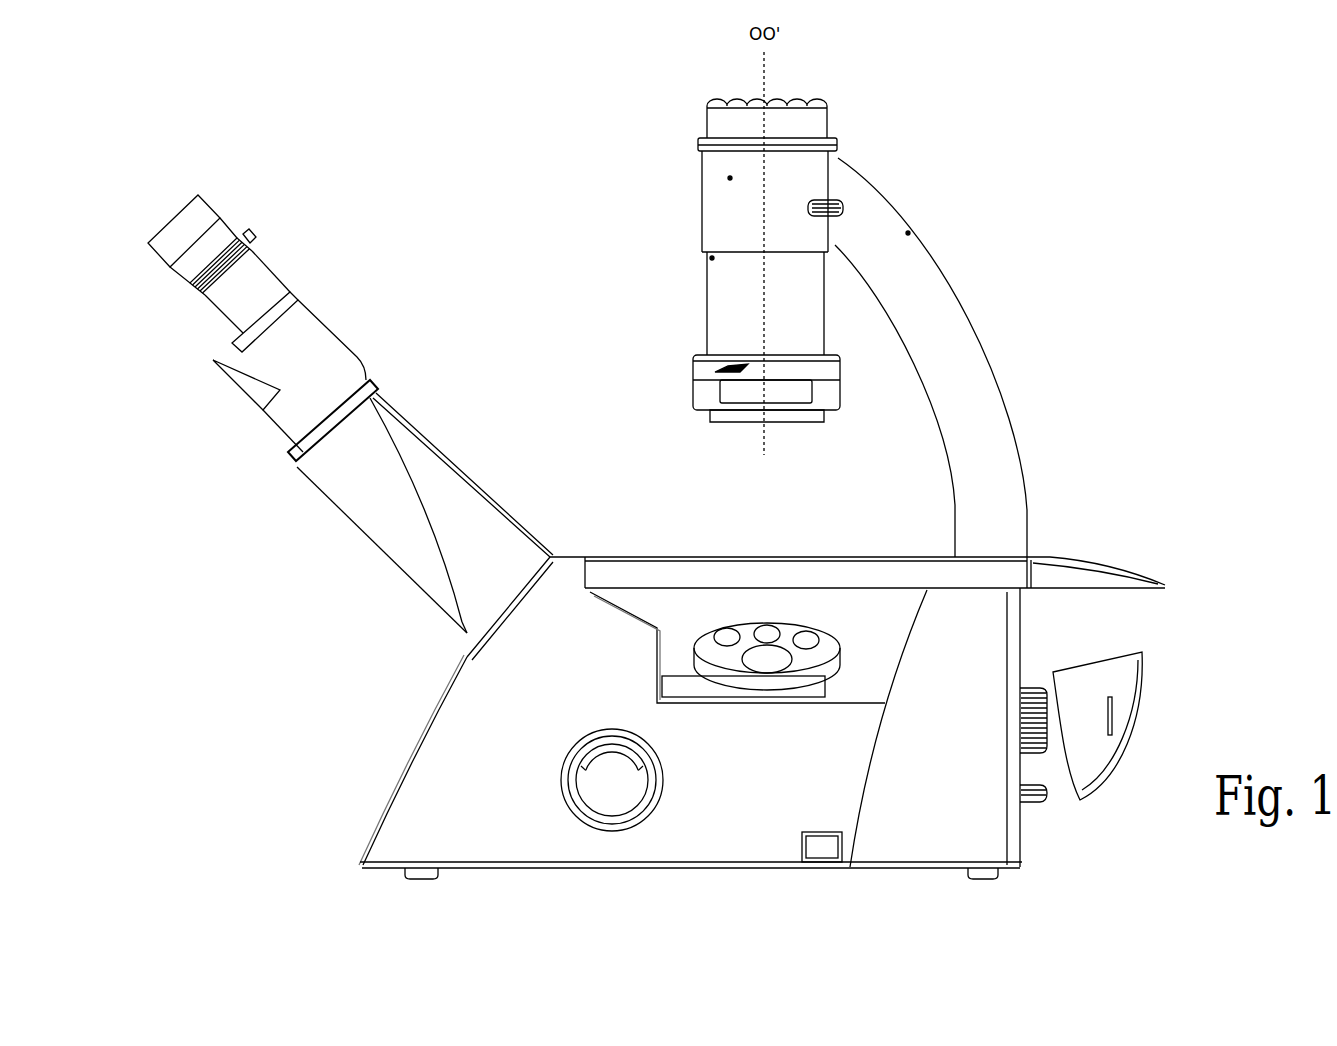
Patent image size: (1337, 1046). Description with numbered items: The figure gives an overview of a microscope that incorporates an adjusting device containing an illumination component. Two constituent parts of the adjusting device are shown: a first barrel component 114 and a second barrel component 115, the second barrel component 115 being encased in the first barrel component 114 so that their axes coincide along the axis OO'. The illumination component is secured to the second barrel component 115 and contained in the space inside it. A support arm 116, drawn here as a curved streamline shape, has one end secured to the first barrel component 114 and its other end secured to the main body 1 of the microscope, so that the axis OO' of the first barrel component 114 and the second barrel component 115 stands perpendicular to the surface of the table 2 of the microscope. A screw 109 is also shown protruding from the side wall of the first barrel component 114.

The main body 1 is at (520, 703).
The table 2 is at (745, 548).
The screw 109 is at (838, 198).
The first barrel component 114 is at (726, 208).
The second barrel component 115 is at (740, 300).
The support arm 116 is at (933, 313).